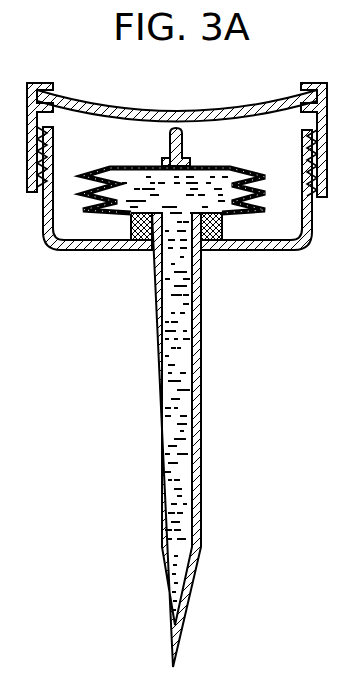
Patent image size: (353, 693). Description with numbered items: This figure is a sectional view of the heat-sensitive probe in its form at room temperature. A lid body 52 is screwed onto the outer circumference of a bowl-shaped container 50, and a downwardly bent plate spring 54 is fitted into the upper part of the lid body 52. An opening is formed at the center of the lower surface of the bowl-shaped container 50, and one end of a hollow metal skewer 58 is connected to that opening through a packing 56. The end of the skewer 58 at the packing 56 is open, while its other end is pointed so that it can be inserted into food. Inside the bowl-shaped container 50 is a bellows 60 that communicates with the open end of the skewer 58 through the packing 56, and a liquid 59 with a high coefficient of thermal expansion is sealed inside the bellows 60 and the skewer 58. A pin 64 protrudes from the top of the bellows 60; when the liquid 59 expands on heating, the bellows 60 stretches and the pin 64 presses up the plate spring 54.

The bowl-shaped container 50 is at (107, 249).
The lid body 52 is at (323, 133).
The plate spring 54 is at (273, 107).
The packing 56 is at (203, 250).
The metal skewer 58 is at (202, 360).
The liquid 59 is at (176, 486).
The bellows 60 is at (252, 214).
The pin 64 is at (182, 137).